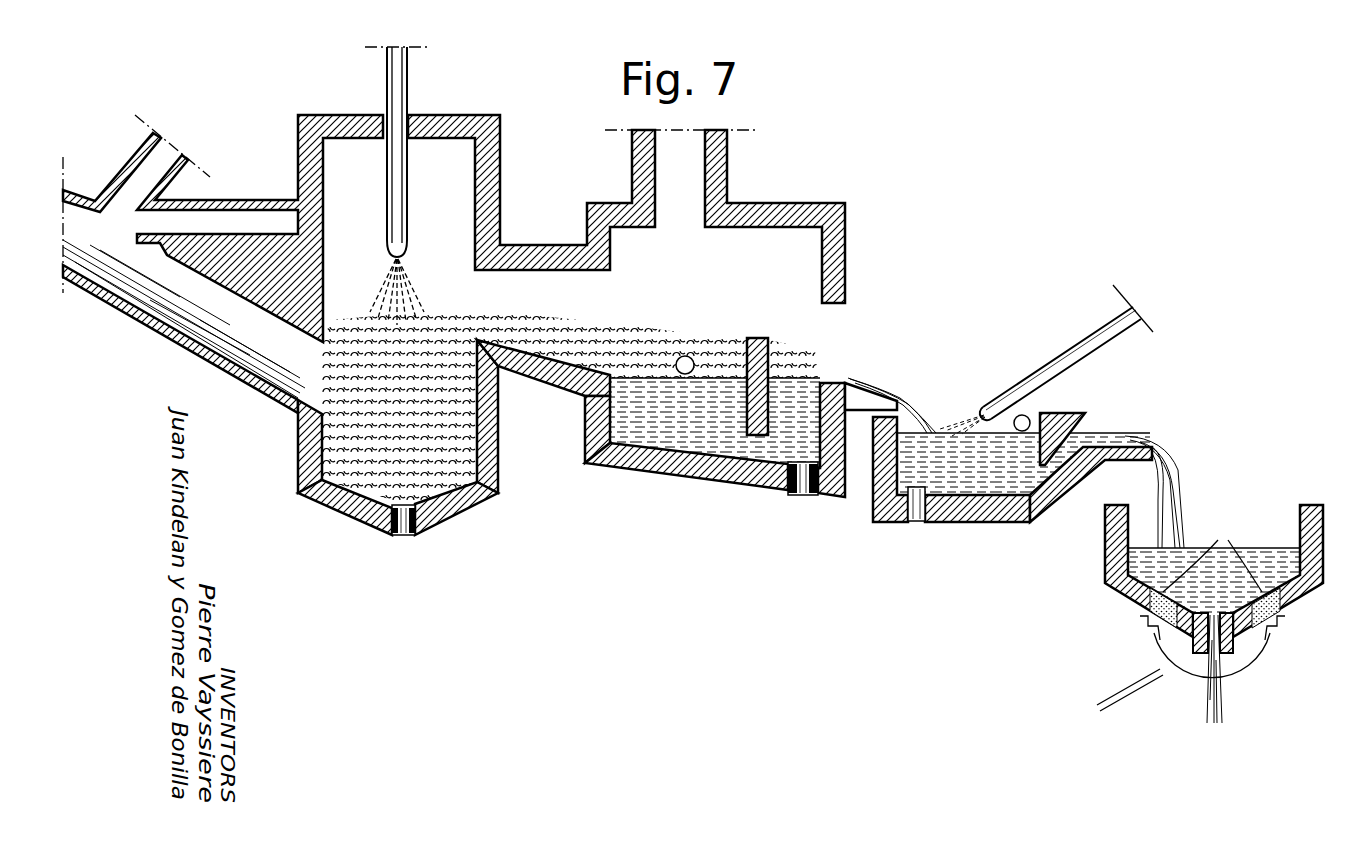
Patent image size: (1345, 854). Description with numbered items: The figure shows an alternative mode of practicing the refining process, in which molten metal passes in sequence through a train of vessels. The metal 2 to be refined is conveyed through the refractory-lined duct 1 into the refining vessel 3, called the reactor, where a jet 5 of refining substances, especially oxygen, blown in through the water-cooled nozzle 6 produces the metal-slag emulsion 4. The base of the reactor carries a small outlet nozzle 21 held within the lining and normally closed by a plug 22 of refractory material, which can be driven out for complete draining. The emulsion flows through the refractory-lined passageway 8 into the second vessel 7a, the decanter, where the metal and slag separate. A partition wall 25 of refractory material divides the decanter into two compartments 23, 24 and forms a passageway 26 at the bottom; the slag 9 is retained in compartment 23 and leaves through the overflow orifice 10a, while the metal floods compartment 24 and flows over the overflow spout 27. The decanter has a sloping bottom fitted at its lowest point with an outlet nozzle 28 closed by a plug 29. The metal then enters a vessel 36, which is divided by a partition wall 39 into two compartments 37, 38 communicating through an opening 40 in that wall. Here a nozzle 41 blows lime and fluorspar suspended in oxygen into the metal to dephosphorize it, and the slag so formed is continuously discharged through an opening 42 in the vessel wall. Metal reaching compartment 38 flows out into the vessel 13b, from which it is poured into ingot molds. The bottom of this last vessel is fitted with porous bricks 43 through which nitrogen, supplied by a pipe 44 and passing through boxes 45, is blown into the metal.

The refractory-lined duct 1 is at (248, 328).
The metal to be refined 2 is at (197, 327).
The refining vessel 3 is at (453, 195).
The metal-slag emulsion 4 is at (338, 458).
The jet of refining substances 5 is at (398, 283).
The nozzle 6 is at (408, 95).
The second vessel 7a is at (810, 273).
The refractory-lined passageway 8 is at (543, 282).
The slag 9 is at (583, 357).
The overflow orifice 10a is at (688, 354).
The vessel 13b is at (1110, 547).
The outlet nozzle 21 is at (367, 523).
The plug 22 is at (402, 530).
The compartment 23 is at (665, 435).
The compartment 24 is at (800, 390).
The partition wall 25 is at (770, 340).
The passageway 26 is at (750, 447).
The overflow spout 27 is at (870, 400).
The outlet nozzle 28 is at (782, 492).
The plug 29 is at (802, 490).
The vessel 36 is at (957, 508).
The compartment 37 is at (879, 505).
The compartment 38 is at (1072, 443).
The partition wall 39 is at (1078, 430).
The opening 40 is at (1037, 480).
The nozzle 41 is at (1085, 337).
The opening 42 is at (1025, 416).
The porous bricks 43 is at (1223, 542).
The pipe 44 is at (1140, 683).
The boxes 45 is at (1147, 623).